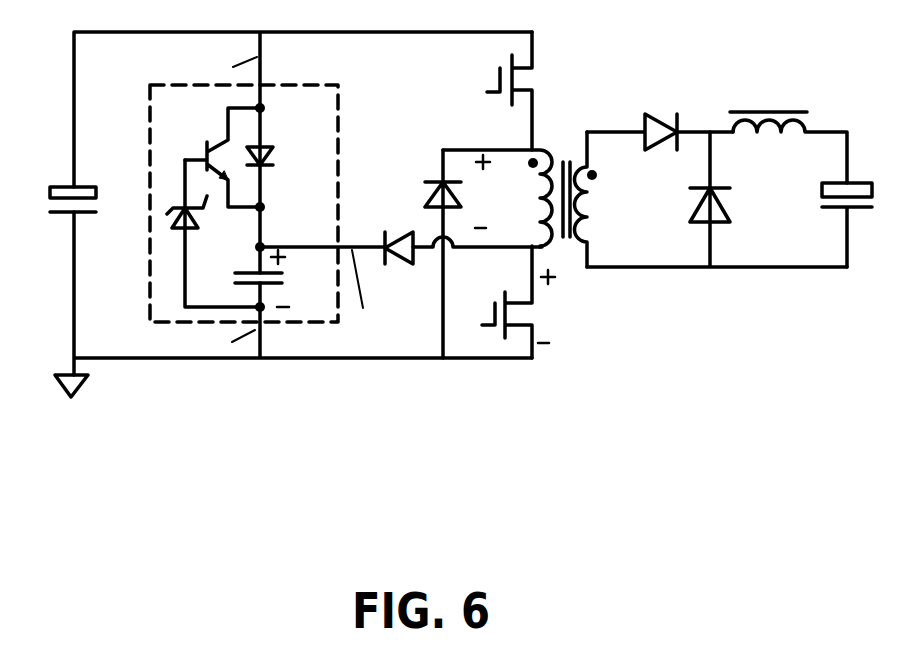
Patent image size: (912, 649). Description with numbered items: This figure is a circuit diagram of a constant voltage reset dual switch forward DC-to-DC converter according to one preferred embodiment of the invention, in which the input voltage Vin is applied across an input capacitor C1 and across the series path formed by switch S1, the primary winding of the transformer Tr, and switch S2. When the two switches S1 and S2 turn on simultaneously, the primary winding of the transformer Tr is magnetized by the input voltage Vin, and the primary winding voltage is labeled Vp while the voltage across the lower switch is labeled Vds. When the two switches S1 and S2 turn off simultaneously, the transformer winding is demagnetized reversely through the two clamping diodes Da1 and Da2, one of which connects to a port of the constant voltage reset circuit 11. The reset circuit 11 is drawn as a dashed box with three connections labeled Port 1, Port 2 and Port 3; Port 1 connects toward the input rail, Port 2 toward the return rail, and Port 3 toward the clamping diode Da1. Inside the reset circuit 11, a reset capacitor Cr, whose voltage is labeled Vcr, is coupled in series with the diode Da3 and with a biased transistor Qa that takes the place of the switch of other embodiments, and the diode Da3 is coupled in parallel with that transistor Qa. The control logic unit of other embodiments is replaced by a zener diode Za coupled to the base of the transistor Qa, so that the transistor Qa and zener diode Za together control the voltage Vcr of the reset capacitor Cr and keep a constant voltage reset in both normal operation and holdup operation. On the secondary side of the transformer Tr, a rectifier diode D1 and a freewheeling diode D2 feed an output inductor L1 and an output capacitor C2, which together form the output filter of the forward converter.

The input capacitor C1 is at (55, 217).
The input voltage Vin is at (102, 53).
The first port of auxiliary circuit Port 1 is at (198, 63).
The second port of auxiliary circuit Port 2 is at (166, 328).
The third port of auxiliary circuit Port 3 is at (375, 298).
The constant voltage reset circuit 11 is at (315, 83).
The auxiliary transistor Qa is at (213, 157).
The diode Da3 is at (284, 159).
The zener diode Za is at (205, 233).
The reset capacitor Cr is at (243, 278).
The resonant capacitor voltage Vcr is at (300, 278).
The clamping diode Da1 is at (394, 265).
The clamping diode Da2 is at (417, 254).
The switch S1 is at (477, 91).
The switch S2 is at (493, 302).
The transformer Tr is at (515, 182).
The primary winding voltage Vp is at (491, 191).
The drain-source voltage Vds is at (561, 306).
The rectifier diode D1 is at (660, 112).
The freewheeling diode D2 is at (717, 199).
The output inductor L1 is at (788, 129).
The output capacitor C2 is at (847, 225).